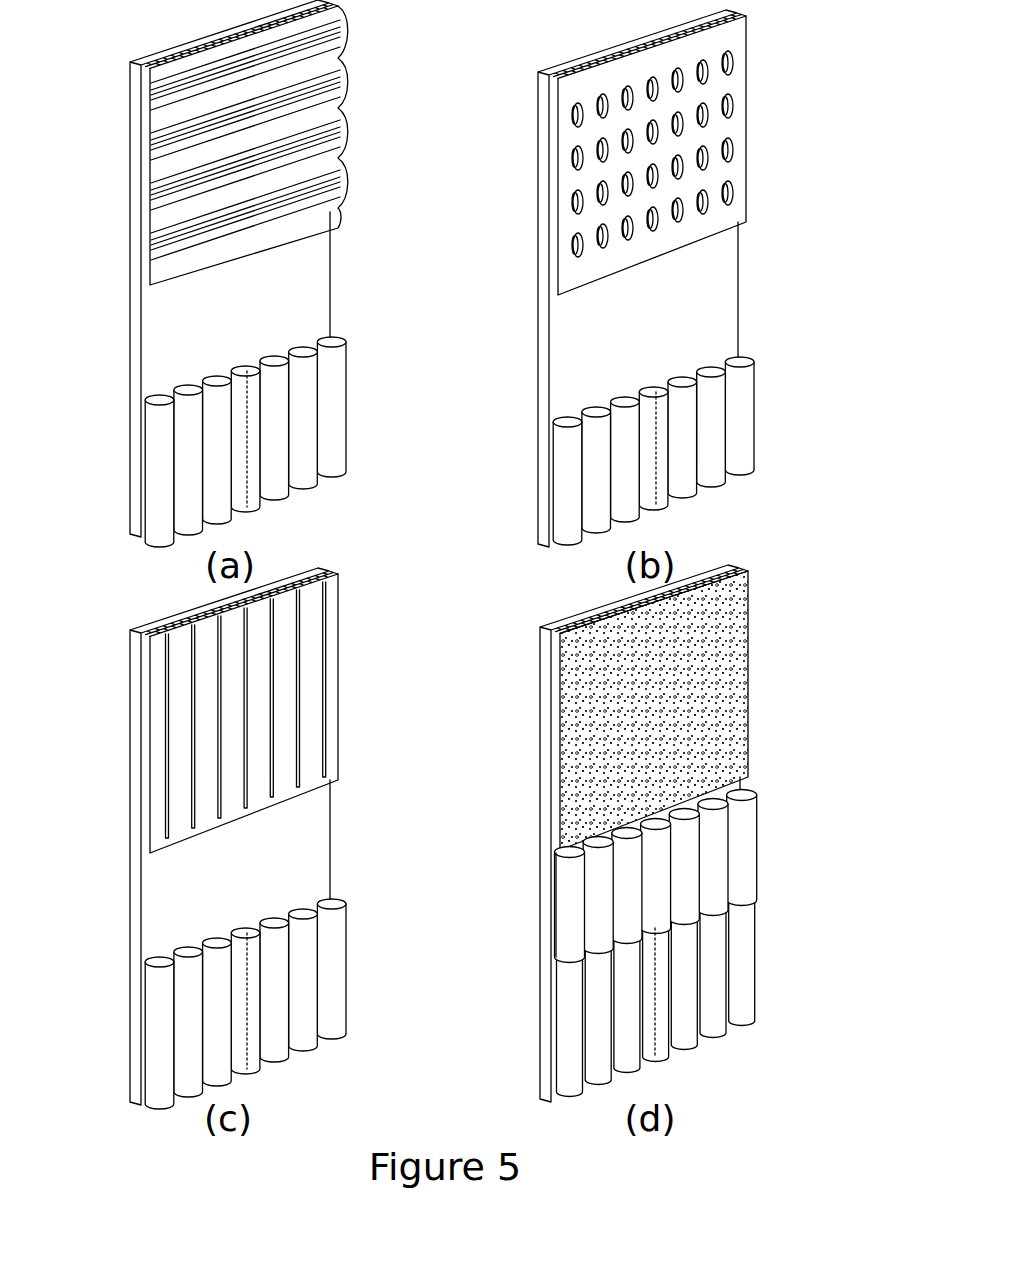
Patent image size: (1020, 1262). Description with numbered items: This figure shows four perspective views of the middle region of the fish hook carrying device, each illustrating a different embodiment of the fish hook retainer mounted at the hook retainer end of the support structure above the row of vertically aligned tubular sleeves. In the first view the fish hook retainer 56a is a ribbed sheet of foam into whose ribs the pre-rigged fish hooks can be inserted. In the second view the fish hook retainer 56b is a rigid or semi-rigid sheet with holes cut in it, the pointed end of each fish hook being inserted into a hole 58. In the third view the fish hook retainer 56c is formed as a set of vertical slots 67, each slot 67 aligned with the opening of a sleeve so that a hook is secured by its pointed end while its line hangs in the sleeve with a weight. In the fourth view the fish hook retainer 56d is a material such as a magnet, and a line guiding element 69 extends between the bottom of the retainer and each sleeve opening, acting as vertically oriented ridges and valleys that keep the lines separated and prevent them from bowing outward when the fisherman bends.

The fish hook retainer 56a is at (337, 58).
The fish hook retainer 56b is at (658, 155).
The fish hook retainer 56c is at (297, 713).
The fish hook retainer 56d is at (723, 605).
The hole 58 is at (575, 157).
The vertical slot 67 is at (300, 646).
The line guiding element 69 is at (710, 852).